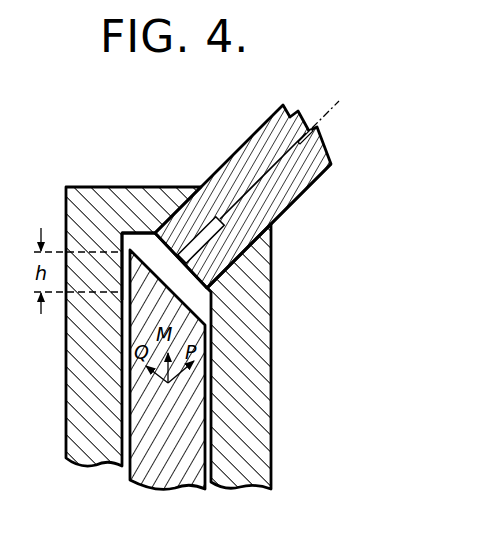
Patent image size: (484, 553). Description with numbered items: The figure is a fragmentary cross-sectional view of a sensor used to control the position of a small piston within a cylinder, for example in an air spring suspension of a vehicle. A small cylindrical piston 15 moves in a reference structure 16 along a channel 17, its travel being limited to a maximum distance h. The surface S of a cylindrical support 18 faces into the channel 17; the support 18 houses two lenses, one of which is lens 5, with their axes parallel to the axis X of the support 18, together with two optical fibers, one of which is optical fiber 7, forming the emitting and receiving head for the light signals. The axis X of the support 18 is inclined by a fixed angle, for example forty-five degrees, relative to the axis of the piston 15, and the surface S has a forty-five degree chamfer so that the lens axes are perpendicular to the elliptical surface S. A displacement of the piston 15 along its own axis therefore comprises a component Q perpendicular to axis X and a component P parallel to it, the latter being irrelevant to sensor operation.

The lens 5 is at (215, 242).
The optical fiber 7 is at (274, 161).
The small cylindrical piston 15 is at (168, 482).
The reference structure 16 is at (274, 278).
The channel 17 is at (137, 242).
The cylindrical support 18 is at (291, 201).
The surface S is at (194, 309).